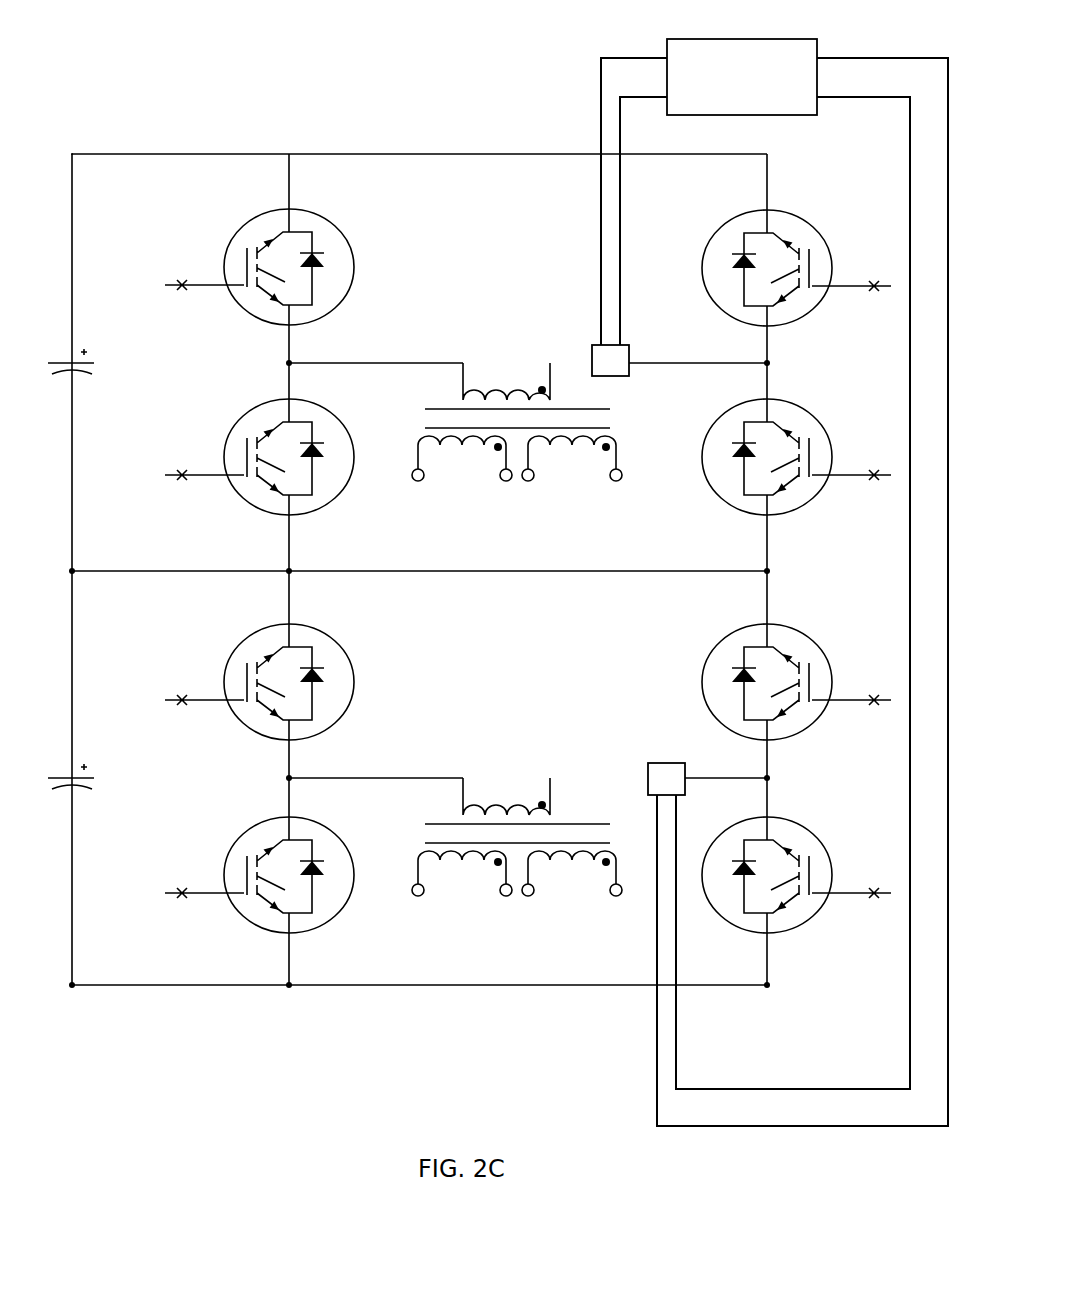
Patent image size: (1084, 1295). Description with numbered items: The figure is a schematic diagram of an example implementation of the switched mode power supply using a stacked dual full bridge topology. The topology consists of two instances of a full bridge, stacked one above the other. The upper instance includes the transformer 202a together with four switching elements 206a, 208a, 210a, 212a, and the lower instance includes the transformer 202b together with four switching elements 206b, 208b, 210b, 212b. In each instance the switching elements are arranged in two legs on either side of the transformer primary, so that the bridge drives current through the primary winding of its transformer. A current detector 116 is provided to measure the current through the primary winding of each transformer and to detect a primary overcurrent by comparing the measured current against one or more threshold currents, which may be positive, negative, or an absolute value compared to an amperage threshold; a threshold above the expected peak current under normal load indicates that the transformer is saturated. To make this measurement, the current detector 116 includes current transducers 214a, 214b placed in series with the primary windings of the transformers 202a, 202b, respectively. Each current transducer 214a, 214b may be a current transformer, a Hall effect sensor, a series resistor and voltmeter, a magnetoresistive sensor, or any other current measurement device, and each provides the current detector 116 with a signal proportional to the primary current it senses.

The current detector 116 is at (774, 569).
The transformer 202a is at (462, 334).
The transformer 202b is at (464, 745).
The switching element 206a is at (796, 258).
The switching element 206b is at (796, 673).
The switching element 208a is at (255, 452).
The switching element 208b is at (257, 867).
The switching element 210a is at (250, 267).
The switching element 210b is at (253, 682).
The switching element 212a is at (797, 450).
The switching element 212b is at (798, 867).
The current transducer 214a is at (573, 349).
The current transducer 214b is at (629, 766).